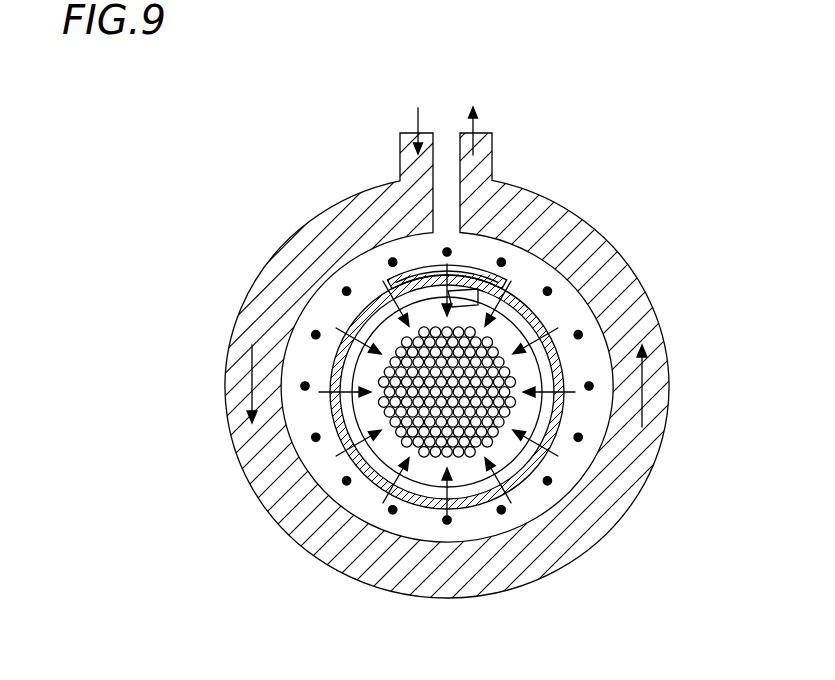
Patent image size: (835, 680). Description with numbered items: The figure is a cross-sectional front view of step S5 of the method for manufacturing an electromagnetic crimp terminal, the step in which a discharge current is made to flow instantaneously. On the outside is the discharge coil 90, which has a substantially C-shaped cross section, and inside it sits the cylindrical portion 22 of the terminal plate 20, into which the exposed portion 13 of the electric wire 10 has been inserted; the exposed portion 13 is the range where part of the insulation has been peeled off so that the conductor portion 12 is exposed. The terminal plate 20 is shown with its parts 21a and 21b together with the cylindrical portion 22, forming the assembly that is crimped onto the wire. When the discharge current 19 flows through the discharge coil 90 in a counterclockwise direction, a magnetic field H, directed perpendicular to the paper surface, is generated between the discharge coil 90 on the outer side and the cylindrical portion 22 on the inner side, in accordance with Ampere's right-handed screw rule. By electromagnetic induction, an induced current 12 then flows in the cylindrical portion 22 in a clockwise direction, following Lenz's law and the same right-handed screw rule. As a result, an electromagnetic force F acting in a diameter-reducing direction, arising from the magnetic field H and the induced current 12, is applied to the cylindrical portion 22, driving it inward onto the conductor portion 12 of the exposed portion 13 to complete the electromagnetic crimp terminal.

The discharge coil 90 is at (613, 270).
The discharge current 19 is at (230, 384).
The terminal plate 20 is at (176, 168).
The inner plate layer 21a is at (445, 290).
The outer plate tab 21b is at (502, 275).
The cylindrical portion 22 is at (348, 336).
The electric wire 10 is at (692, 545).
The exposed portion 13 is at (485, 435).
The conductor portion 12 is at (335, 412).
The magnetic field H is at (438, 523).
The electromagnetic force F is at (348, 576).
The step of instantaneously flowing a discharge current S5 is at (218, 78).